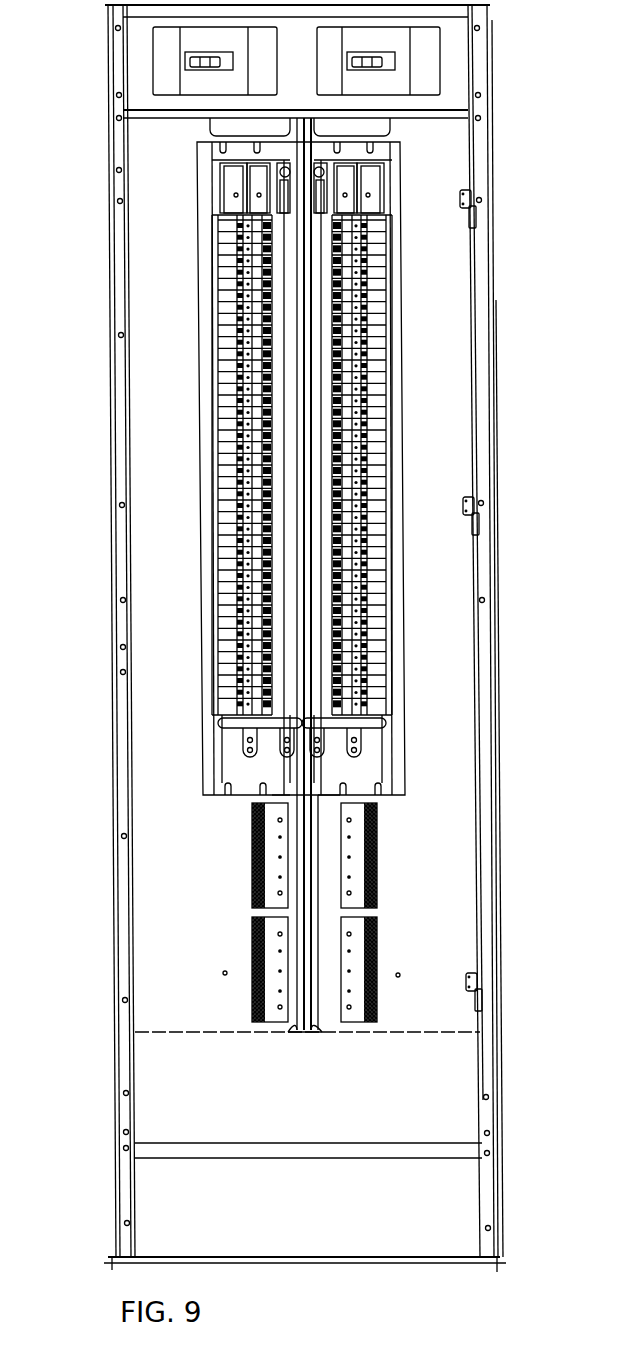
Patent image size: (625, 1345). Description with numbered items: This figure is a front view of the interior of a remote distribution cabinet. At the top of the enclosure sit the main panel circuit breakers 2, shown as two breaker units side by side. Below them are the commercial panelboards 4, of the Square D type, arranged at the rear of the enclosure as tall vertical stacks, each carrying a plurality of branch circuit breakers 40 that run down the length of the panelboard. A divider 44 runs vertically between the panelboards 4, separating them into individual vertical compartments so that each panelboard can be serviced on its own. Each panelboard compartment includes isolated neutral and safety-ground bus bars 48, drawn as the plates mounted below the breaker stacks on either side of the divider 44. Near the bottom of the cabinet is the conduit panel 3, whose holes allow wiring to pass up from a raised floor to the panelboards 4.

The main panel circuit breaker 2 is at (150, 66).
The conduit panel 3 is at (481, 1154).
The commercial panelboard 4 is at (203, 326).
The circuit breaker 40 is at (214, 223).
The divider 44 is at (298, 1030).
The isolated neutral and safety-ground bus bar 48 is at (250, 866).